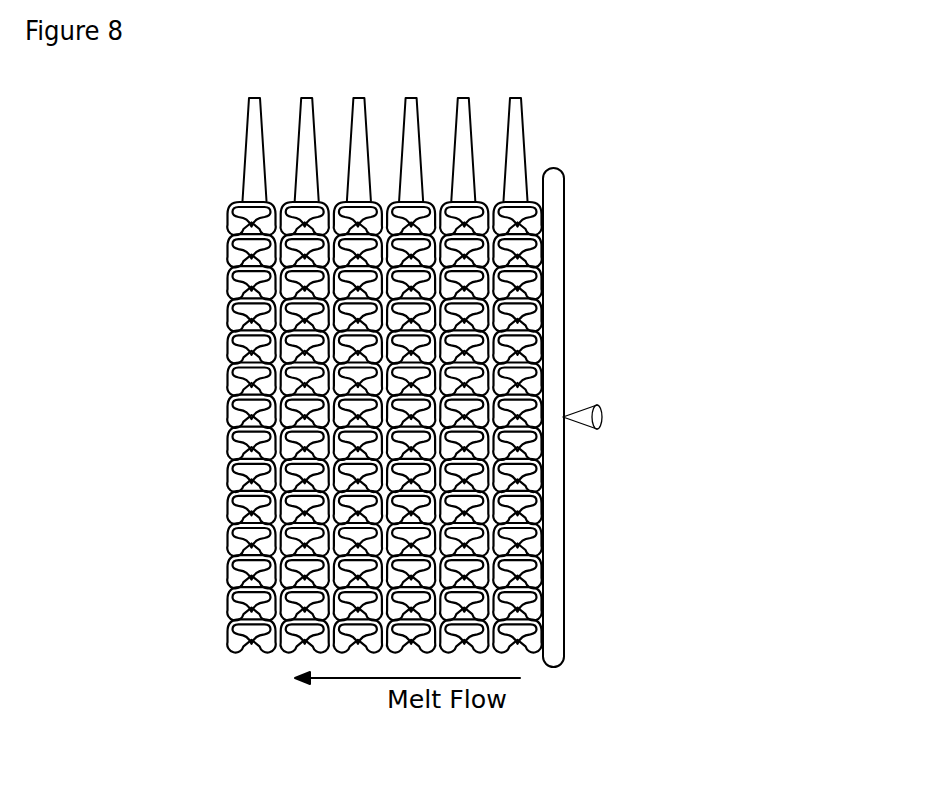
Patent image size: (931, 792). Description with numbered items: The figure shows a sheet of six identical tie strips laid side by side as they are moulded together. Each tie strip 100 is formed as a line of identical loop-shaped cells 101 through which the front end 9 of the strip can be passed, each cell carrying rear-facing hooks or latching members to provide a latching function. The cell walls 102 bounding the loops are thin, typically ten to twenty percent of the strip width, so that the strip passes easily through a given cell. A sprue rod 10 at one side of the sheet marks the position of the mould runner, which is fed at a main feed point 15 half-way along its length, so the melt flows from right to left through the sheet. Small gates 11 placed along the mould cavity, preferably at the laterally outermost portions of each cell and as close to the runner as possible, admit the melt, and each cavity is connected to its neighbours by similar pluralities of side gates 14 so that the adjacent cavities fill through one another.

The front end 9 is at (518, 143).
The sprue rod 10 is at (557, 238).
The small gates 11 is at (543, 388).
The side gates 14 is at (411, 467).
The main feed point 15 is at (602, 415).
The tie strip 100 is at (293, 653).
The loop-shaped cells 101 is at (223, 283).
The cell walls 102 is at (228, 482).